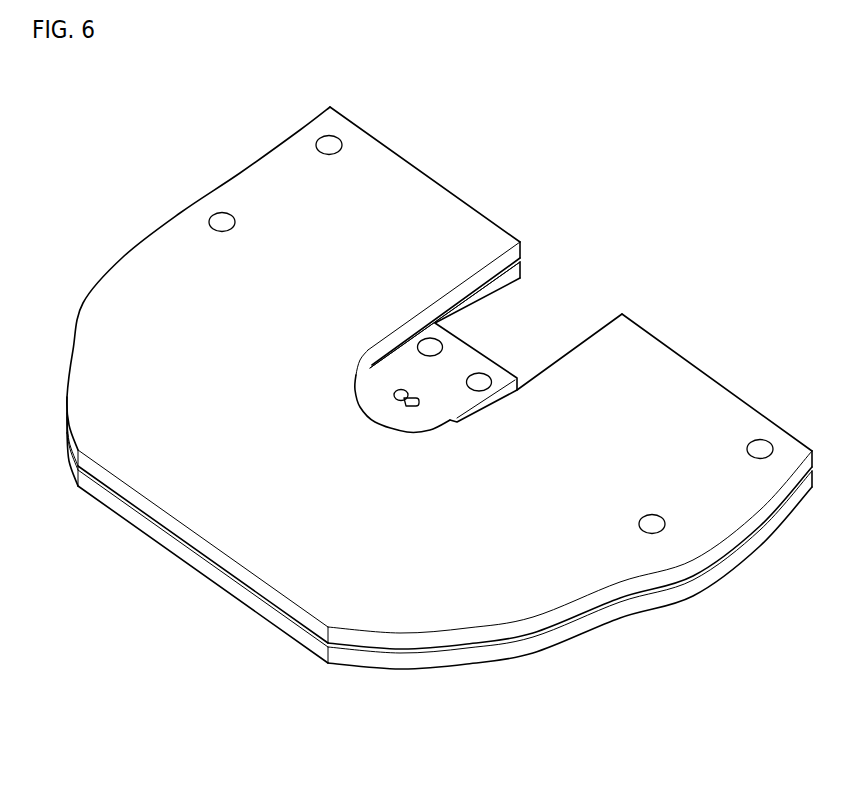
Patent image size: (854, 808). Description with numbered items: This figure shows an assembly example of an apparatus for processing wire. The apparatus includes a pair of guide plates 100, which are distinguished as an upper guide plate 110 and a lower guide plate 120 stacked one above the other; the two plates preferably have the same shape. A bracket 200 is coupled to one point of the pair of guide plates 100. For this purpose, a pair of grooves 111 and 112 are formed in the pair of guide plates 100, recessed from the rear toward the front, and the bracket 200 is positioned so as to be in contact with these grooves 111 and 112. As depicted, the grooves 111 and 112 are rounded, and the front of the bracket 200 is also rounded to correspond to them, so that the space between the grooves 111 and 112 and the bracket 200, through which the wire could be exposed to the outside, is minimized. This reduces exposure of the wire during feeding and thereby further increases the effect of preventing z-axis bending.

The pair of guide plates 100 is at (439, 416).
The upper guide plate 110 is at (439, 385).
The lower guide plate 120 is at (439, 482).
The groove 111 is at (377, 425).
The groove 112 is at (220, 620).
The bracket 200 is at (495, 343).